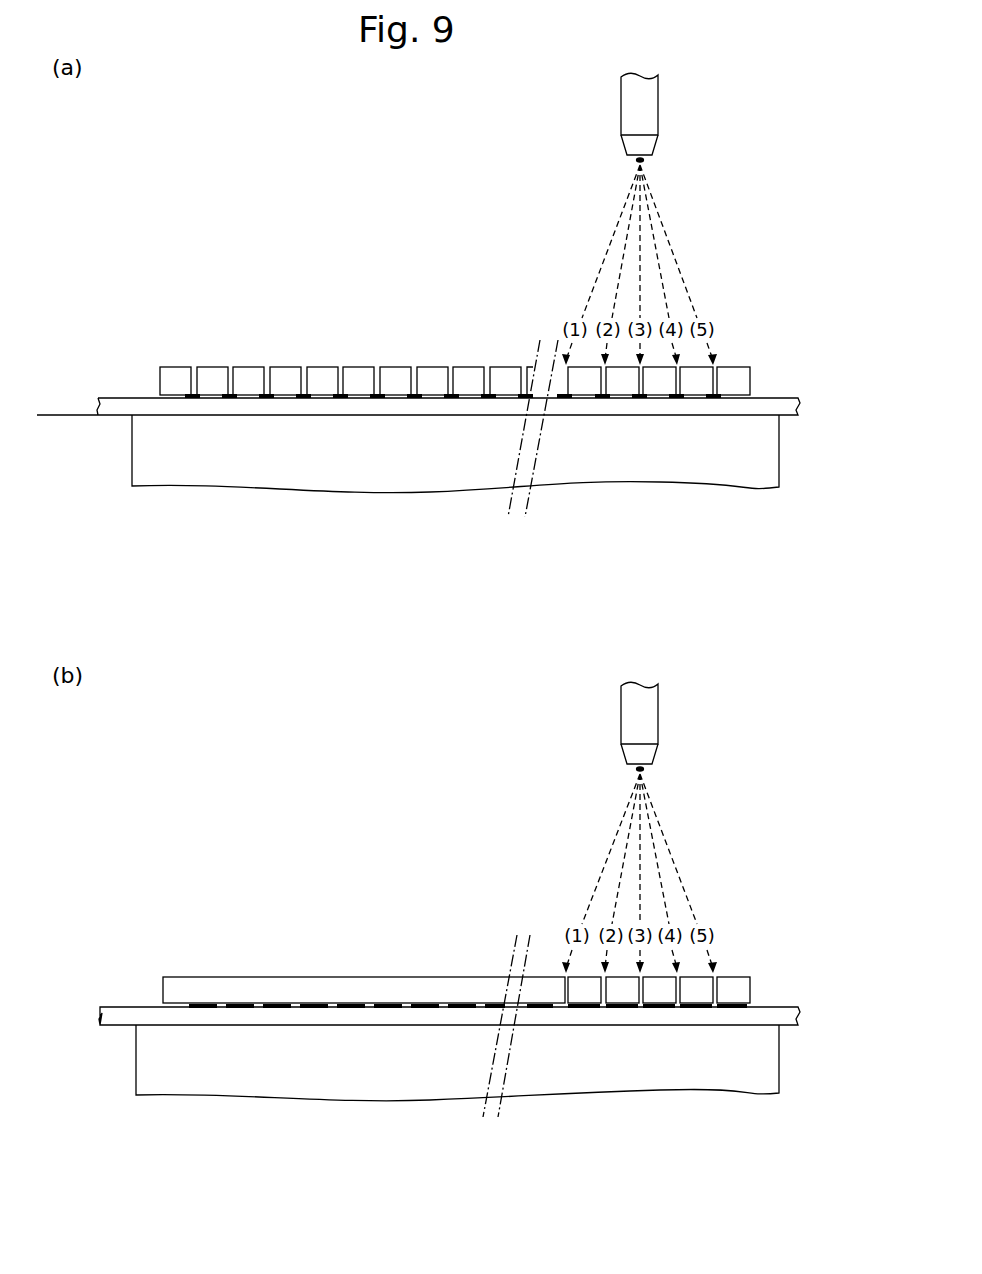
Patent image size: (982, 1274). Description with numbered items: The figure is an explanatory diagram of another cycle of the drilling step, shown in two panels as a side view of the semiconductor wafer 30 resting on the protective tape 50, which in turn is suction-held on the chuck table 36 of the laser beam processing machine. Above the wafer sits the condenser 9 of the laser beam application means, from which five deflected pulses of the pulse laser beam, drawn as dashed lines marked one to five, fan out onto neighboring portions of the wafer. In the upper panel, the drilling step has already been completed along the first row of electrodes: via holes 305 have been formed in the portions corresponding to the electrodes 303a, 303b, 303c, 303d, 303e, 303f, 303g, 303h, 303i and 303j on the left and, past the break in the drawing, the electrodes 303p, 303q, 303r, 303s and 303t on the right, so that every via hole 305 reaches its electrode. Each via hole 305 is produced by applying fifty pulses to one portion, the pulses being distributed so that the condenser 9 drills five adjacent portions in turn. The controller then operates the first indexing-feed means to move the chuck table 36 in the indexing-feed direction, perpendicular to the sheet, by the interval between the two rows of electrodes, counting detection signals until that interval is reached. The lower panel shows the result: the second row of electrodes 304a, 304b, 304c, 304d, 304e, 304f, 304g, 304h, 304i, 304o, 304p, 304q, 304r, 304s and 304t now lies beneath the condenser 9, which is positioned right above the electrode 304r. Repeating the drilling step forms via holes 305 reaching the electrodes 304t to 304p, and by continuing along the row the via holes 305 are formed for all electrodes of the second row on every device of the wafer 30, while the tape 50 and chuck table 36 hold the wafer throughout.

The condenser 9 is at (658, 100).
The semiconductor wafer 30 is at (462, 624).
The via hole 305 is at (228, 367).
The protective tape 50 is at (778, 398).
The chuck table 36 is at (770, 460).
The electrode 303a is at (192, 399).
The electrode 303b is at (229, 399).
The electrode 303c is at (266, 399).
The electrode 303d is at (303, 399).
The electrode 303e is at (340, 399).
The electrode 303f is at (377, 399).
The electrode 303g is at (414, 399).
The electrode 303h is at (451, 399).
The electrode 303i is at (488, 399).
The electrode 303j is at (525, 399).
The electrode 303p is at (564, 399).
The electrode 303q is at (602, 399).
The electrode 303r is at (639, 399).
The electrode 303s is at (676, 399).
The electrode 303t is at (713, 399).
The electrode 304a is at (195, 1008).
The electrode 304b is at (229, 1008).
The electrode 304c is at (268, 1008).
The electrode 304d is at (305, 1008).
The electrode 304e is at (343, 1008).
The electrode 304f is at (380, 1008).
The electrode 304g is at (417, 1008).
The electrode 304h is at (453, 1008).
The electrode 304i is at (487, 1008).
The electrode 304o is at (530, 1008).
The electrode 304p is at (565, 1008).
The electrode 304q is at (603, 1008).
The electrode 304r is at (641, 1008).
The electrode 304s is at (678, 1008).
The electrode 304t is at (716, 1008).